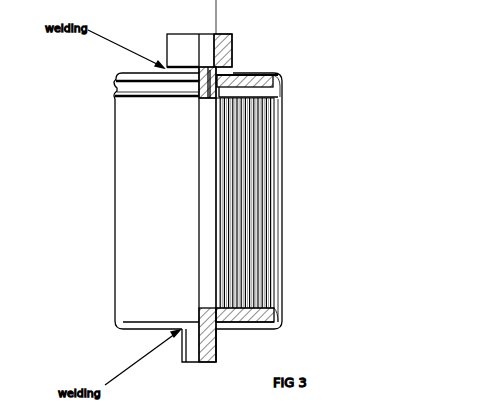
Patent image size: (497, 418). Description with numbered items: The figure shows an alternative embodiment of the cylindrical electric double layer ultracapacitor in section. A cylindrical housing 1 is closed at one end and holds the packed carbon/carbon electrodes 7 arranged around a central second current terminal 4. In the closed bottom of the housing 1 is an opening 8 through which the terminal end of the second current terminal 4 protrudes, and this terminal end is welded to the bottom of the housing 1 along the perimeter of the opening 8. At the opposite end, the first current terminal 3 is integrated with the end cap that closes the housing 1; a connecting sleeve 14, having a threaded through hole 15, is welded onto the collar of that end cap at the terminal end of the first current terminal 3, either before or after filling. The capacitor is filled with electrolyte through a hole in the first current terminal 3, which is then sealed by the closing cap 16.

The cylindrical housing 1 is at (280, 323).
The first current terminal 3 is at (276, 104).
The second current terminal 4 is at (205, 317).
The packed carbon/carbon electrodes 7 is at (255, 193).
The opening/hole 8 is at (218, 318).
The connecting sleeve 14 is at (228, 40).
The threaded through hole 15 is at (207, 50).
The closing cap 16 is at (212, 71).